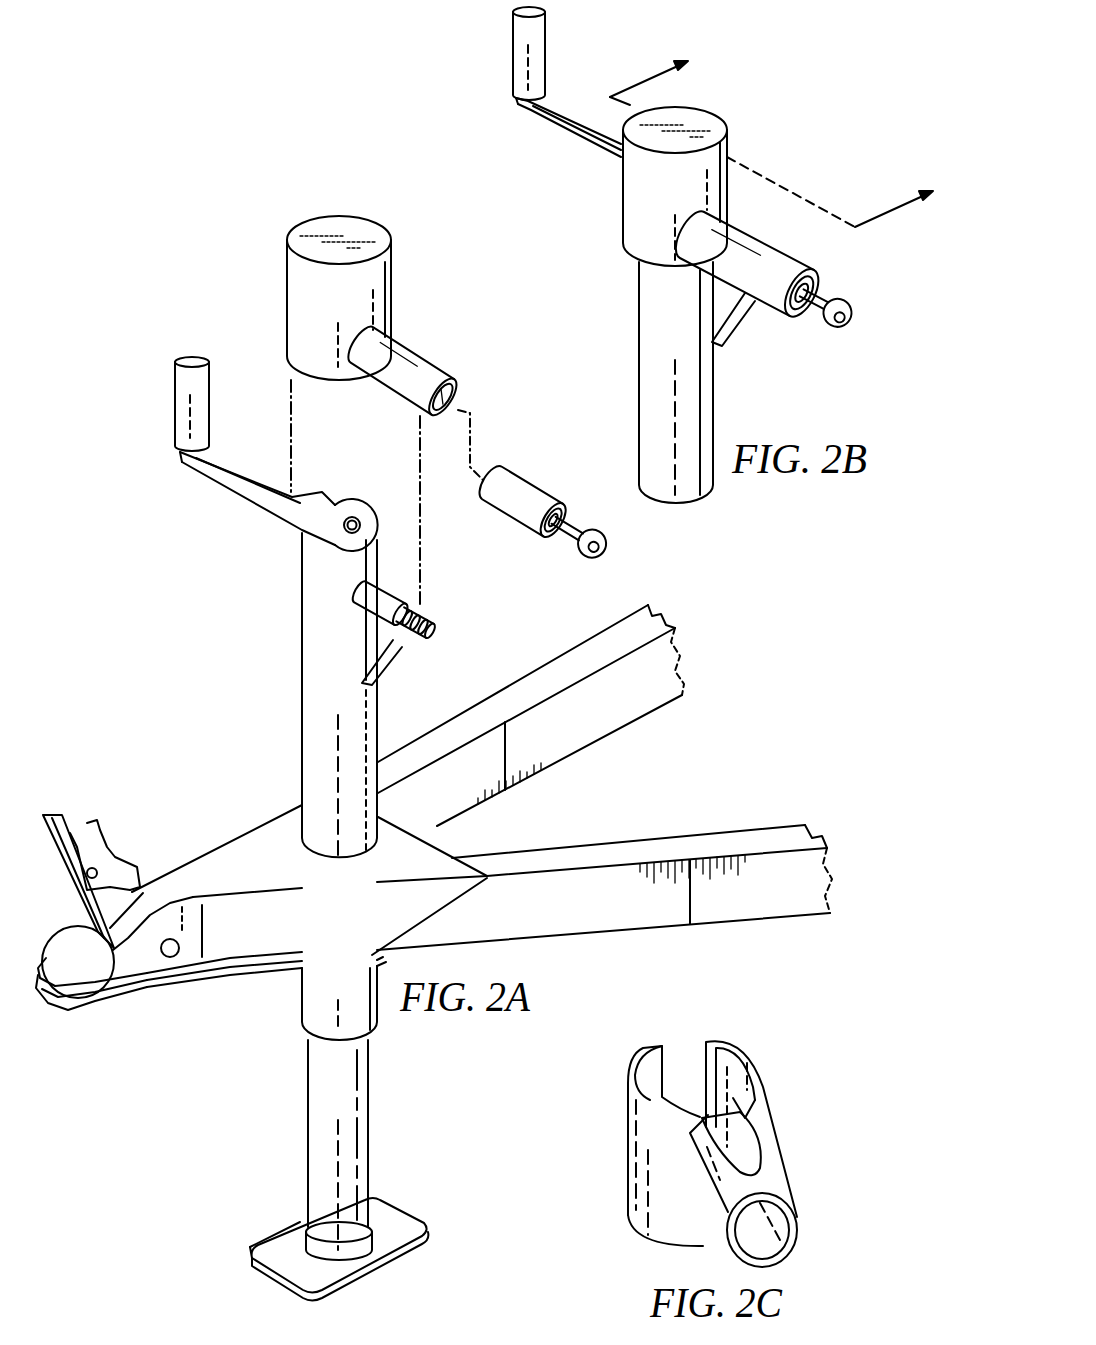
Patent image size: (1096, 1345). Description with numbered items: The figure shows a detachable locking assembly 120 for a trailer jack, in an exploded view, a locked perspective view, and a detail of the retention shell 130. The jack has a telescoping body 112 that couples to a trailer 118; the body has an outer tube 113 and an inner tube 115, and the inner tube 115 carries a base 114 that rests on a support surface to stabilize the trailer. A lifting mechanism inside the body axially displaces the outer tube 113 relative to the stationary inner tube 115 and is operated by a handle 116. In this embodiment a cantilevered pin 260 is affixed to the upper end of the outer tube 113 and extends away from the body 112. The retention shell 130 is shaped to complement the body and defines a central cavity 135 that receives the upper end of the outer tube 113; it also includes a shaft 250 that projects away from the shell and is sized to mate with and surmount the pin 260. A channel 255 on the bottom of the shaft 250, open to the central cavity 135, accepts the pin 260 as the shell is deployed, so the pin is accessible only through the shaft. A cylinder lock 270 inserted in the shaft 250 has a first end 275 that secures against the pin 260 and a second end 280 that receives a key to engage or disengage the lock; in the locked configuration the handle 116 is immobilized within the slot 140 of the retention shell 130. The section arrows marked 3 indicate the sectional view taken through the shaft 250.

In FIG. 2A, the telescoping body 112 is at (280, 737).
In FIG. 2A, the outer tube 113 is at (312, 650).
In FIG. 2A, the base 114 is at (286, 1224).
In FIG. 2A, the inner tube 115 is at (318, 1085).
In FIG. 2A, the handle 116 is at (185, 403).
In FIG. 2A, the trailer 118 is at (130, 966).
In FIG. 2B, the locking assembly 120 is at (835, 260).
In FIG. 2A, the retention shell 130 is at (331, 218).
In FIG. 2C, the central cavity 135 is at (724, 1074).
In FIG. 2C, the slot 140 is at (681, 1046).
In FIG. 2A, the shaft 250 is at (438, 368).
In FIG. 2C, the shaft 250 is at (783, 1184).
In FIG. 2C, the channel 255 is at (750, 1113).
In FIG. 2A, the cantilevered pin 260 is at (443, 632).
In FIG. 2A, the cylinder lock 270 is at (520, 512).
In FIG. 2A, the first end 275 is at (495, 456).
In FIG. 2A, the second end 280 is at (590, 512).
In FIG. 2B, the section line 3 is at (780, 138).